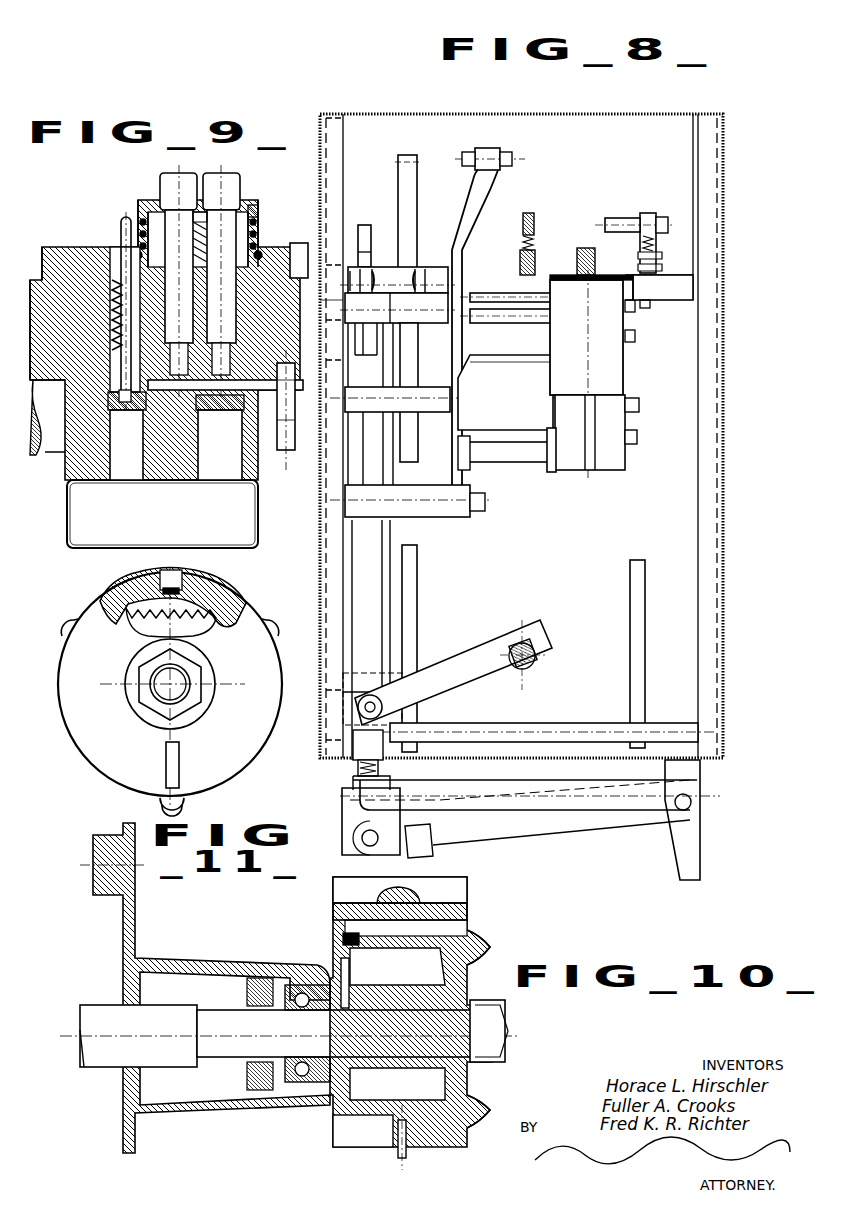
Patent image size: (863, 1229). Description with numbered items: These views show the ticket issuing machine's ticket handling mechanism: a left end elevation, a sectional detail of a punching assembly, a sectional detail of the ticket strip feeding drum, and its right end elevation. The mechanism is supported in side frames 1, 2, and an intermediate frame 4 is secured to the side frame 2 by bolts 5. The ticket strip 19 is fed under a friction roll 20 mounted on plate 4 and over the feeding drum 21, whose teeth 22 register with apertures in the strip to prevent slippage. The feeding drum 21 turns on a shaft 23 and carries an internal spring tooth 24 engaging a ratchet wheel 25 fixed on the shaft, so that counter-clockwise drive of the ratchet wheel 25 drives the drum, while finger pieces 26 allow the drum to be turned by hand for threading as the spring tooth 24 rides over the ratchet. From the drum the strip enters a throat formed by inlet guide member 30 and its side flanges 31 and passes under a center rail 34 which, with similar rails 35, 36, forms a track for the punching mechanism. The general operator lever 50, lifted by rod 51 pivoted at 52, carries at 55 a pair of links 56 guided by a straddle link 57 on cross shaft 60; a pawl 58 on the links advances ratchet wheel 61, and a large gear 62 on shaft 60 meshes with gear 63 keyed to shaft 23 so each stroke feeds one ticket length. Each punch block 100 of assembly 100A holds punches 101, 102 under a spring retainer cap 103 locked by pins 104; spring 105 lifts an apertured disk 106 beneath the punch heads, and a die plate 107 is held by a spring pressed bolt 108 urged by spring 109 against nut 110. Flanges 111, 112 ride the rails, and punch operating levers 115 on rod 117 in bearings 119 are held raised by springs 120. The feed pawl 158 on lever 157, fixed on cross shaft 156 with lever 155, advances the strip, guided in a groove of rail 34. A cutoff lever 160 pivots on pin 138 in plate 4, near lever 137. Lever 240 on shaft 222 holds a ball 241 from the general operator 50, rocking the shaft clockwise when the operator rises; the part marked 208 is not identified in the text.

In FIG. 8, the side frame 1 is at (708, 480).
In FIG. 8, the side frame 2 is at (320, 536).
In FIG. 8, the intermediate frame 4 is at (488, 197).
In FIG. 11, the intermediate frame 4 is at (135, 939).
In FIG. 8, the bolts 5 is at (480, 497).
In FIG. 9, the ticket strip 19 is at (258, 390).
In FIG. 8, the ticket strip 19 is at (570, 280).
In FIG. 11, the ticket strip 19 is at (470, 917).
In FIG. 8, the friction roll 20 is at (608, 462).
In FIG. 8, the feeding drum 21 is at (637, 427).
In FIG. 10, the feeding drum 21 is at (82, 748).
In FIG. 11, the feeding drum 21 is at (445, 1140).
In FIG. 8, the teeth 22 is at (595, 400).
In FIG. 10, the teeth 22 is at (64, 622).
In FIG. 11, the teeth 22 is at (398, 1150).
In FIG. 8, the shaft 23 is at (440, 405).
In FIG. 10, the shaft 23 is at (182, 682).
In FIG. 11, the shaft 23 is at (220, 1020).
In FIG. 10, the spring tooth 24 is at (200, 608).
In FIG. 11, the spring tooth 24 is at (343, 939).
In FIG. 10, the ratchet wheel 25 is at (128, 628).
In FIG. 11, the ratchet wheel 25 is at (349, 970).
In FIG. 8, the finger pieces 26 is at (639, 402).
In FIG. 10, the finger pieces 26 is at (180, 757).
In FIG. 11, the finger pieces 26 is at (492, 946).
In FIG. 8, the inlet guide member 30 is at (582, 355).
In FIG. 8, the side flanges 31 is at (553, 347).
In FIG. 9, the center rail 34 is at (296, 385).
In FIG. 8, the center rail 34 is at (577, 258).
In FIG. 8, the rail 35 is at (520, 263).
In FIG. 9, the rail 36 is at (47, 380).
In FIG. 8, the rail 36 is at (638, 263).
In FIG. 8, the general operator lever 50 is at (368, 673).
In FIG. 8, the rod 51 is at (380, 768).
In FIG. 8, the pivot 52 is at (343, 681).
In FIG. 8, the pivot 55 is at (343, 714).
In FIG. 8, the links 56 is at (392, 533).
In FIG. 8, the straddle link 57 is at (358, 273).
In FIG. 8, the pawl 58 is at (362, 355).
In FIG. 8, the cross shaft 60 is at (425, 267).
In FIG. 8, the ratchet wheel 61 is at (363, 225).
In FIG. 8, the large gear 62 is at (417, 197).
In FIG. 8, the gear 63 is at (418, 341).
In FIG. 9, the punch block 100 is at (82, 247).
In FIG. 9, the punch block assembly 100A is at (48, 247).
In FIG. 9, the punch 101 is at (168, 178).
In FIG. 9, the punch 102 is at (228, 178).
In FIG. 9, the spring retainer cap 103 is at (150, 212).
In FIG. 9, the pins 104 is at (262, 250).
In FIG. 9, the spring 105 is at (258, 222).
In FIG. 9, the apertured disk 106 is at (253, 206).
In FIG. 9, the die plate 107 is at (220, 437).
In FIG. 9, the spring pressed bolt 108 is at (118, 212).
In FIG. 9, the spring 109 is at (110, 280).
In FIG. 9, the nut 110 is at (127, 435).
In FIG. 9, the flange 111 is at (33, 280).
In FIG. 9, the flange 112 is at (298, 243).
In FIG. 8, the punch operating lever 115 is at (648, 213).
In FIG. 8, the rod 117 is at (612, 218).
In FIG. 8, the bearings 119 is at (662, 243).
In FIG. 8, the springs 120 is at (643, 243).
In FIG. 8, the lever 137 is at (478, 150).
In FIG. 8, the pin 138 is at (462, 158).
In FIG. 8, the lever 155 is at (417, 601).
In FIG. 8, the cross shaft 156 is at (615, 723).
In FIG. 8, the lever 157 is at (630, 601).
In FIG. 9, the pawl 158 is at (286, 450).
In FIG. 8, the cutoff lever 160 is at (508, 152).
In FIG. 9, the hook 208 is at (42, 455).
In FIG. 8, the shaft 222 is at (512, 650).
In FIG. 8, the lever 240 is at (455, 660).
In FIG. 8, the ball 241 is at (385, 710).